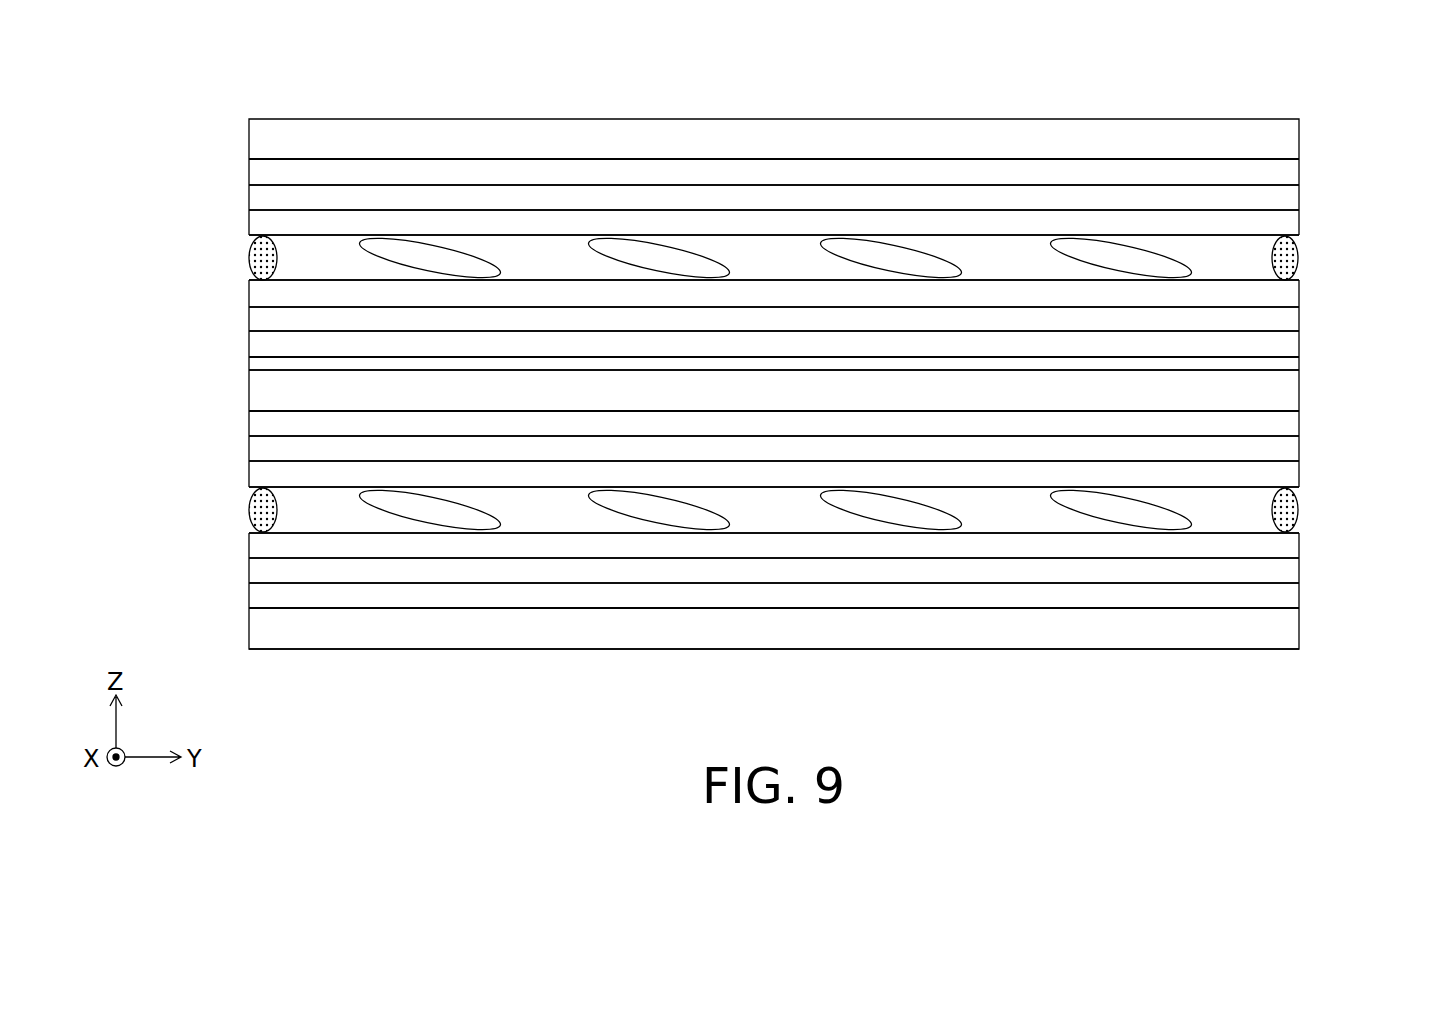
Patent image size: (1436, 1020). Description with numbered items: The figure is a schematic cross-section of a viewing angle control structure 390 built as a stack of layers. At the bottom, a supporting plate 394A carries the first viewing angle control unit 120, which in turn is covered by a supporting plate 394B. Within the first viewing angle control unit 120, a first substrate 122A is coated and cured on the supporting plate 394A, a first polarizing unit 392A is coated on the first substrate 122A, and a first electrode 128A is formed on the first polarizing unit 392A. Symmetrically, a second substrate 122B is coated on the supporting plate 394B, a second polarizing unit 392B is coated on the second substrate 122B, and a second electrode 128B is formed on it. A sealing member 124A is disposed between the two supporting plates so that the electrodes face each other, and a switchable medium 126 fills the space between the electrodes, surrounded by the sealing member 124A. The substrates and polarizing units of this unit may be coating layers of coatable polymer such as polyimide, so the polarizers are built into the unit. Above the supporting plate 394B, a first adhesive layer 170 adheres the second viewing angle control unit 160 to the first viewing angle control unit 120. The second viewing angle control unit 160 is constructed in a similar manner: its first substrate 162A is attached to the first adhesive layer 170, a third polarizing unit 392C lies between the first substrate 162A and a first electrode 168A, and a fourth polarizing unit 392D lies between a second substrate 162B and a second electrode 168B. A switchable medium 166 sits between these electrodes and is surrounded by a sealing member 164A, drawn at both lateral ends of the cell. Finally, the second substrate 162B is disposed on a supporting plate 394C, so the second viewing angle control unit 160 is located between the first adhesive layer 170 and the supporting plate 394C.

The viewing angle control structure 390 is at (1432, 713).
The supporting plate 394C is at (1288, 142).
The fourth polarizing unit 392D is at (1288, 198).
The third polarizing unit 392C is at (1288, 321).
The second polarizing unit 392B is at (1288, 449).
The first polarizing unit 392A is at (1288, 573).
The supporting plate 394B is at (1288, 392).
The supporting plate 394A is at (1288, 634).
The first adhesive layer 170 is at (1288, 365).
The second viewing angle control unit 160 is at (145, 160).
The second substrate 162B is at (253, 174).
The second electrode 168B is at (258, 222).
The switchable medium 166 is at (415, 255).
The sealing member 164A is at (247, 265).
The first electrode 168A is at (265, 292).
The first substrate 162A is at (265, 343).
The first viewing angle control unit 120 is at (145, 412).
The second substrate 122B is at (257, 425).
The second electrode 128B is at (258, 475).
The switchable medium 126 is at (415, 508).
The sealing member 124A is at (248, 515).
The first electrode 128A is at (262, 545).
The first substrate 122A is at (258, 595).